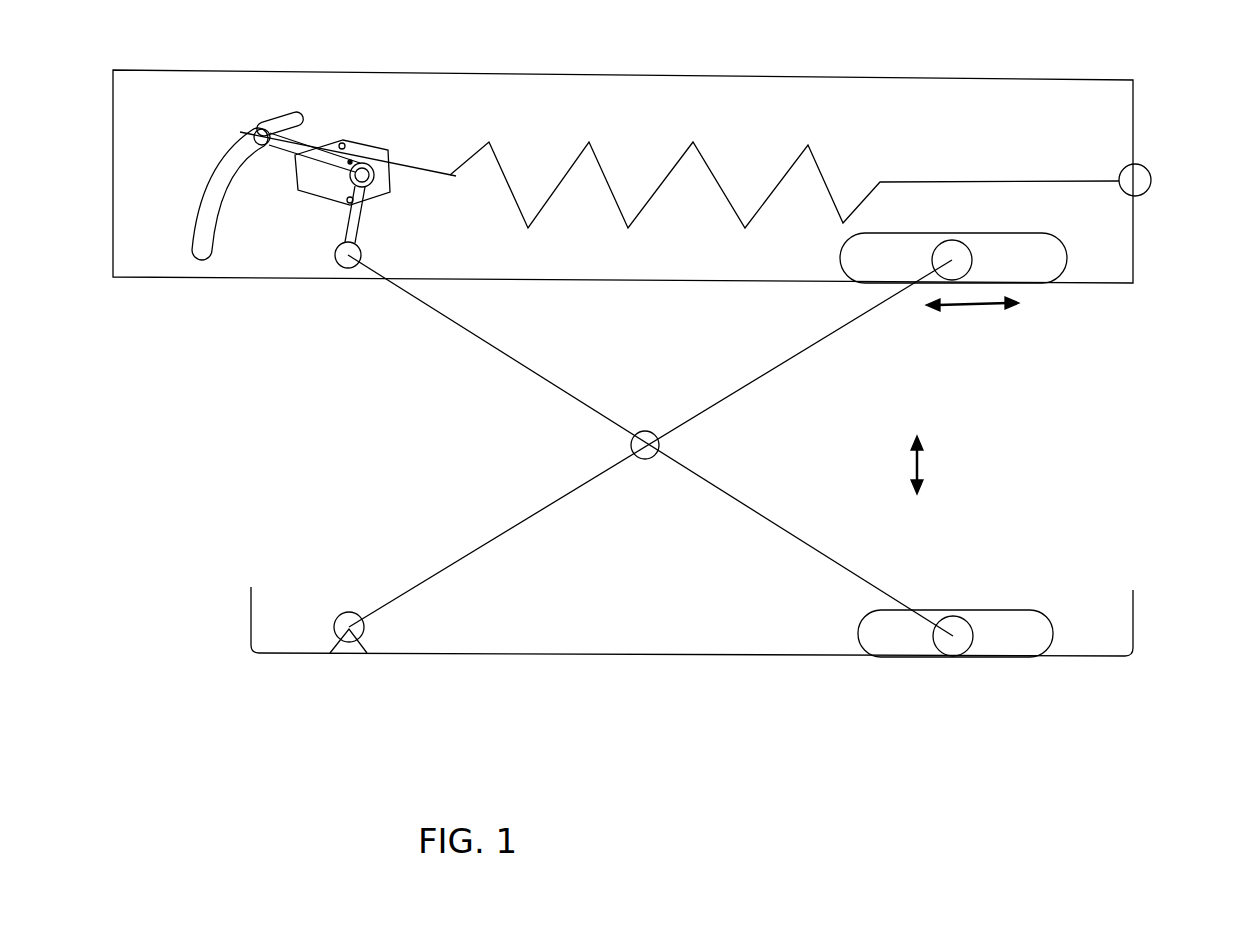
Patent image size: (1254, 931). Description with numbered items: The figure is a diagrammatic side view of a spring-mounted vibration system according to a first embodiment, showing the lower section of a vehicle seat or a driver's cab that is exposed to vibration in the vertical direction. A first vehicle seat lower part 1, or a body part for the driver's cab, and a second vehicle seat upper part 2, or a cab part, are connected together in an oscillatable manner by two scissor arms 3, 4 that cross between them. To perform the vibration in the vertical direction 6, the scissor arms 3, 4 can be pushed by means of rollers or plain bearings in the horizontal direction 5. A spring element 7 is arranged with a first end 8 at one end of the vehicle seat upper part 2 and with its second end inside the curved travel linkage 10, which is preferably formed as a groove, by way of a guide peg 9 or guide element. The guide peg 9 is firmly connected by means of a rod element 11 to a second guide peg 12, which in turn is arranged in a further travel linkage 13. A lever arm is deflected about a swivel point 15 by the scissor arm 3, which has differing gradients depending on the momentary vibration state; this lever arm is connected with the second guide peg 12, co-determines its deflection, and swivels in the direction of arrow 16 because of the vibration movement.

The vehicle seat lower part 1 is at (752, 657).
The vehicle seat upper part 2 is at (1123, 258).
The scissor arm 3 is at (740, 504).
The scissor arm 4 is at (779, 362).
The horizontal direction 5 is at (975, 306).
The vibration direction 6 is at (918, 463).
The spring element 7 is at (828, 168).
The first end 8 is at (1137, 178).
The guide peg 9 is at (262, 138).
The curved travel linkage 10 is at (213, 183).
The rod element 11 is at (282, 147).
The second guide peg 12 is at (362, 175).
The further travel linkage 13 is at (317, 178).
The swivel point 15 is at (362, 175).
The arrow direction 16 is at (370, 220).